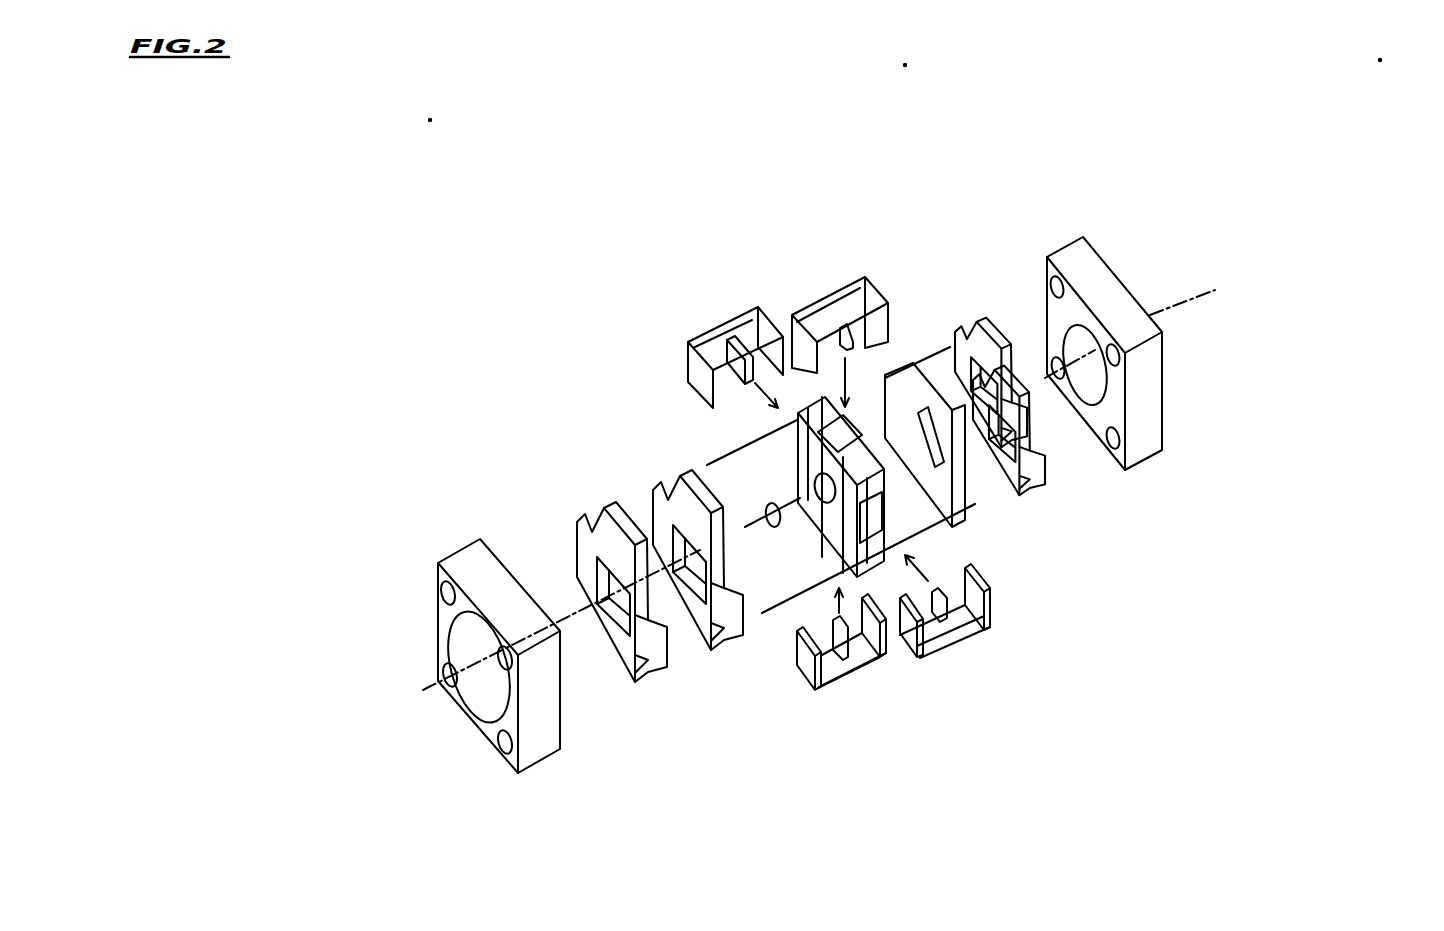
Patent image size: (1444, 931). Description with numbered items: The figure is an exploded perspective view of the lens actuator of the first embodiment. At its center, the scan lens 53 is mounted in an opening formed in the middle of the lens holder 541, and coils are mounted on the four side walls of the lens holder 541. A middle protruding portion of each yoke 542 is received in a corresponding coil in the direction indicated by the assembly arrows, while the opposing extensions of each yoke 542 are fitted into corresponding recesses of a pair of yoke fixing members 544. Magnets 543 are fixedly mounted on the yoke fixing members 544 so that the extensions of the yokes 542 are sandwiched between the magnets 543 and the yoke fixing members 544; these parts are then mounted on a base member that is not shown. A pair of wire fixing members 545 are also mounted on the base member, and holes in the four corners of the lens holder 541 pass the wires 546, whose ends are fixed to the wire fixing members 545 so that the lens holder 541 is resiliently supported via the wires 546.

The lens holder 541 is at (800, 477).
The yoke 542 is at (985, 674).
The magnet 543 is at (712, 641).
The yoke fixing member 544 is at (992, 200).
The wire fixing member 545 is at (1178, 180).
The wire 546 is at (777, 607).
The scan lens 53 is at (763, 510).